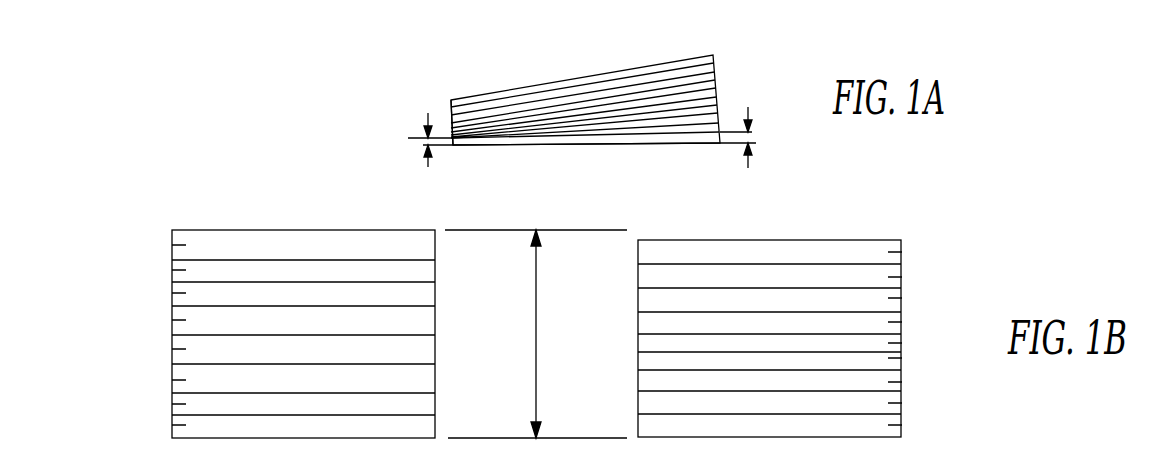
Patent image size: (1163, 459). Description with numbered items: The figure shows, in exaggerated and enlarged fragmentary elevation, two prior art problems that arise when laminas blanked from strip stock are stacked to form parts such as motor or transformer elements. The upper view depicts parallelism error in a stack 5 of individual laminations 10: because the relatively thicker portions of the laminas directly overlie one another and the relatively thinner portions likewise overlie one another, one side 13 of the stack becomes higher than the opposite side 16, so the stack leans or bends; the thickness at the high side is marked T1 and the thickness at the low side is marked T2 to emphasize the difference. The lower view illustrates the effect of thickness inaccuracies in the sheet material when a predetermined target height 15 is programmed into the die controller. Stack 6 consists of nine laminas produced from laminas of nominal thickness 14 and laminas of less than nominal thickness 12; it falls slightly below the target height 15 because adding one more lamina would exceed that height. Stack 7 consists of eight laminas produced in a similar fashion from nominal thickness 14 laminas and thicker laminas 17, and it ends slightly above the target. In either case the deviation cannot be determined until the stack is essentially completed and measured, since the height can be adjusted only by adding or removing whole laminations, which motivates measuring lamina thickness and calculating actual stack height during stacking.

In FIG. 1A, the tapered laminated sputtering target 5 is at (603, 74).
In FIG. 1A, the individual laminations 10 is at (718, 107).
In FIG. 1A, the one side of the stack 13 is at (682, 145).
In FIG. 1A, the opposite side of the stack 16 is at (477, 145).
In FIG. 1A, the backing plate thickness at thick end T1 is at (752, 132).
In FIG. 1A, the backing plate thickness at thin end T2 is at (410, 138).
In FIG. 1B, the stack 7 is at (340, 230).
In FIG. 1B, the stack 6 is at (827, 232).
In FIG. 1B, the target height 15 is at (592, 230).
In FIG. 1B, the nominal lamina thickness 14 is at (186, 270).
In FIG. 1B, the thicker lamina thickness 17 is at (186, 245).
In FIG. 1B, the less than nominal lamina thickness 12 is at (902, 343).